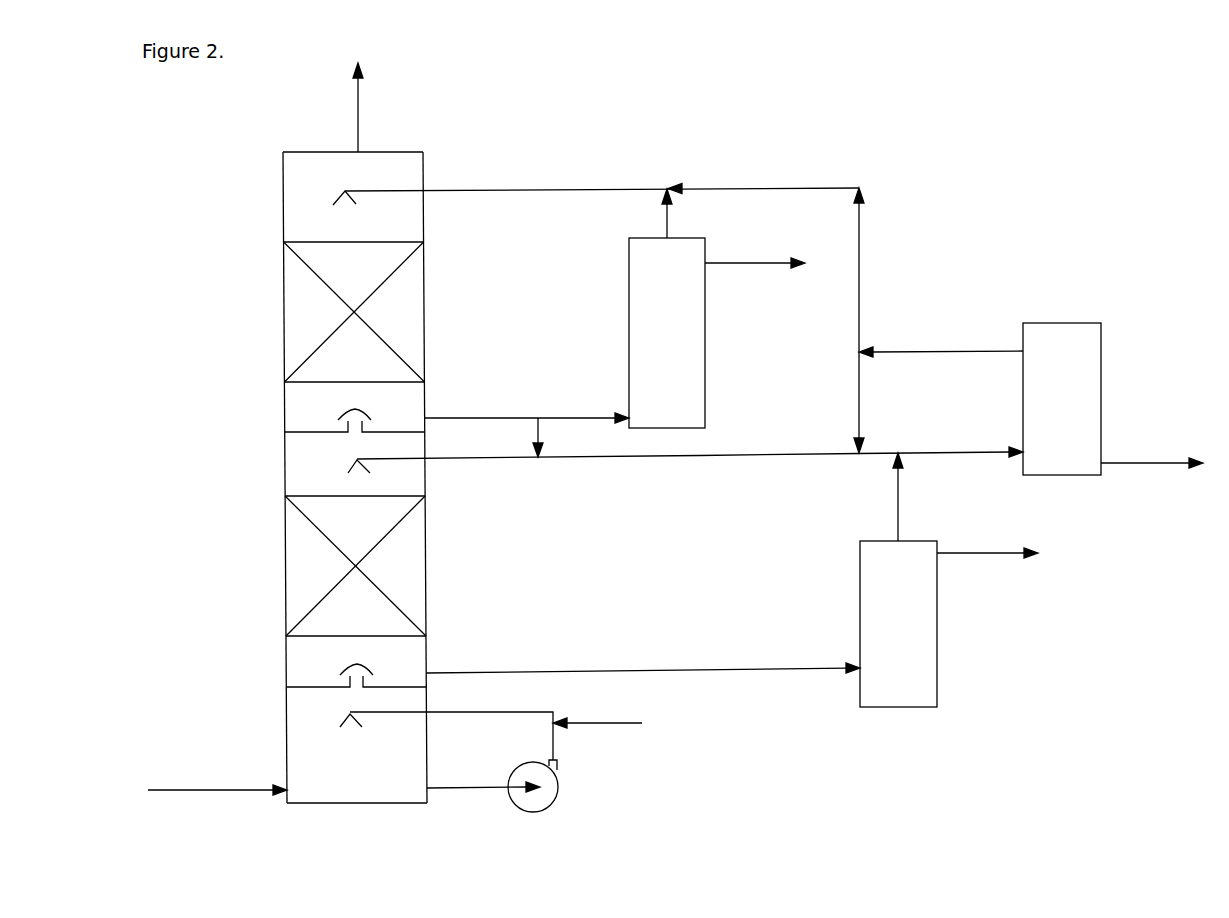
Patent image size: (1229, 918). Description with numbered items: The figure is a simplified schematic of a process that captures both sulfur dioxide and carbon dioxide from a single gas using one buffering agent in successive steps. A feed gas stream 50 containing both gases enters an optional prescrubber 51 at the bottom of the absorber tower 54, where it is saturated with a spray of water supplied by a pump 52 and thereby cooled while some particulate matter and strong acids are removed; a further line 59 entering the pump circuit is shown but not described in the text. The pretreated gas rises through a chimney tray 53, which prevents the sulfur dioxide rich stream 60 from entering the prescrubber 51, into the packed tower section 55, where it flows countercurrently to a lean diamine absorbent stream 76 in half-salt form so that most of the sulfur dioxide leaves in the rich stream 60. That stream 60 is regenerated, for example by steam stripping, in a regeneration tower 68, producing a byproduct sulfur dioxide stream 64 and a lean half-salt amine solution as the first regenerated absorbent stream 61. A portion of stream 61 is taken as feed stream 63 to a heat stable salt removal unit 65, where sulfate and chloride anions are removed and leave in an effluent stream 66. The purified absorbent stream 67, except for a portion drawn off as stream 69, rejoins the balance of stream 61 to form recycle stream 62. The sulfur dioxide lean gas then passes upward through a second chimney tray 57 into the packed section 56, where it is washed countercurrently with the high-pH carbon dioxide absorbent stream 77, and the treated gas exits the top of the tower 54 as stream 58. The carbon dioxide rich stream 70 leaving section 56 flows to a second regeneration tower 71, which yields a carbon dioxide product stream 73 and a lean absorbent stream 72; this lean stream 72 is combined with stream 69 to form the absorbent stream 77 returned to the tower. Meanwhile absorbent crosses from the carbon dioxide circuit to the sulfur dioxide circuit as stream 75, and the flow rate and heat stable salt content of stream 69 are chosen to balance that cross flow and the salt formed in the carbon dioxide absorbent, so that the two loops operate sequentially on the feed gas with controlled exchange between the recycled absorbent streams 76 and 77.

The feed gas stream 50 is at (217, 809).
The prescrubber 51 is at (357, 773).
The pump 52 is at (548, 782).
The chimney tray 53 is at (323, 678).
The tower 54 is at (285, 478).
The packed tower section 55 is at (315, 573).
The packed section 56 is at (310, 322).
The chimney tray 57 is at (323, 425).
The treated gas stream 58 is at (370, 121).
The make-up liquid stream 59 is at (501, 739).
The SO2 rich stream 60 is at (643, 644).
The first regenerated absorbent stream 61 is at (874, 497).
The recycle stream 62 is at (763, 476).
The feed stream 63 is at (941, 470).
The byproduct SO2 stream 64 is at (993, 571).
The heat stable salt removal unit 65 is at (1108, 428).
The effluent stream 66 is at (1153, 481).
The purified absorbent stream 67 is at (941, 324).
The regeneration tower 68 is at (947, 656).
The stream 69 is at (880, 320).
The CO2 rich stream 70 is at (527, 400).
The regeneration tower 71 is at (629, 347).
The CO2 lean absorbent stream 72 is at (655, 218).
The CO2 product stream 73 is at (755, 244).
The absorbent stream 75 is at (547, 438).
The lean diamine absorbent stream 76 is at (473, 469).
The second absorbent stream 77 is at (510, 178).